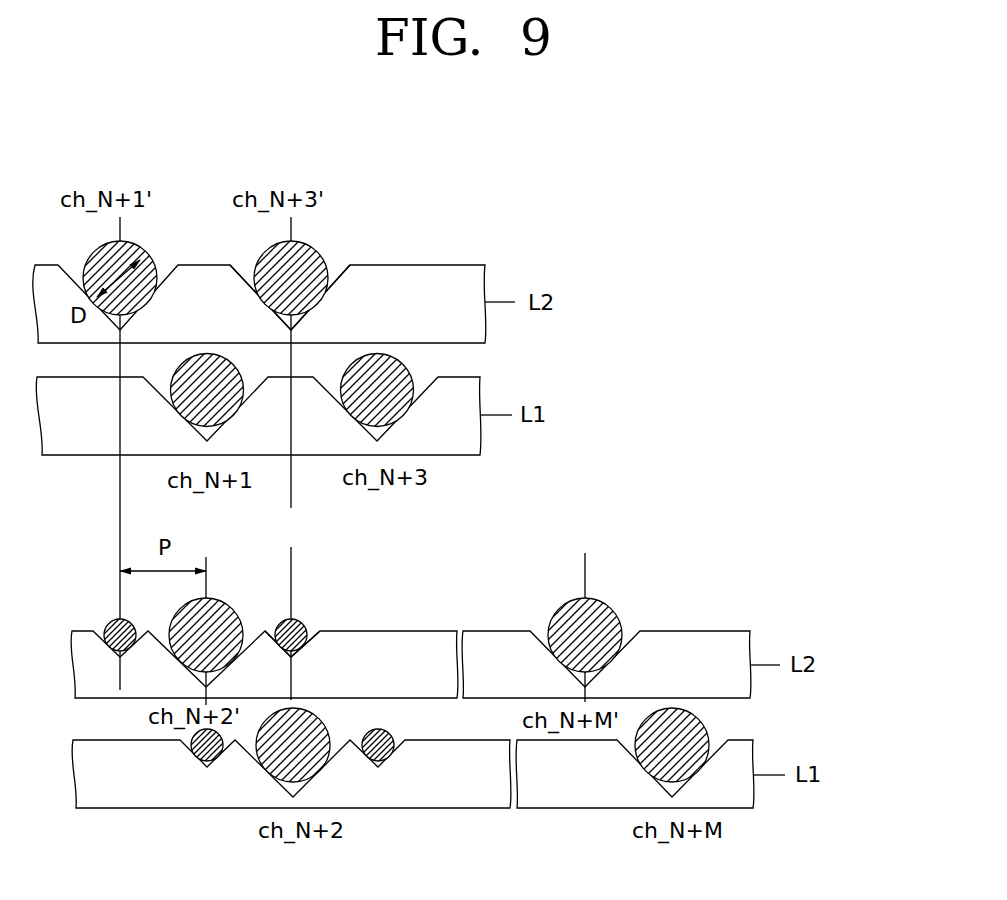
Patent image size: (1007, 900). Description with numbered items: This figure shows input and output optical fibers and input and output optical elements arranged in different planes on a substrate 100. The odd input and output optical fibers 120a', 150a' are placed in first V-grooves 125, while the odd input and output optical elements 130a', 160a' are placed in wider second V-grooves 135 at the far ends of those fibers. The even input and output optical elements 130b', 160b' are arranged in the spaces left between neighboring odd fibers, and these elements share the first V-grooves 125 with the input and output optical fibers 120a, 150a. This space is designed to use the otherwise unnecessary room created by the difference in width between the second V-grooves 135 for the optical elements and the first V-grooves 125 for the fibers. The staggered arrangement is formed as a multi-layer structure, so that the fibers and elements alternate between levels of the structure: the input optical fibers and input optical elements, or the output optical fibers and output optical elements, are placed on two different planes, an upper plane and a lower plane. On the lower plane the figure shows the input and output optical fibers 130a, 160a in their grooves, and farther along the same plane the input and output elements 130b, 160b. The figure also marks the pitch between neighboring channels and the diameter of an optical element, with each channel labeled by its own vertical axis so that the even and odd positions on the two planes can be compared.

The substrate 100 is at (400, 265).
The second V-grooves 135 is at (293, 325).
The first V-grooves 125 is at (300, 655).
The odd output optical element 160a' is at (290, 229).
The odd input optical element 130a' is at (290, 229).
The output optical fiber 160a is at (401, 387).
The input optical fiber 130a is at (401, 387).
The even output optical element 160b' is at (395, 592).
The even input optical element 130b' is at (395, 592).
The large optical fiber (lower layer, second block) 160b is at (565, 745).
The large fiber cladding (lower layer, second block) 130b is at (565, 745).
The odd output optical fiber 150a' is at (284, 603).
The odd input optical fiber 120a' is at (284, 603).
The output optical fiber 150a is at (356, 801).
The input optical fiber 120a is at (356, 801).